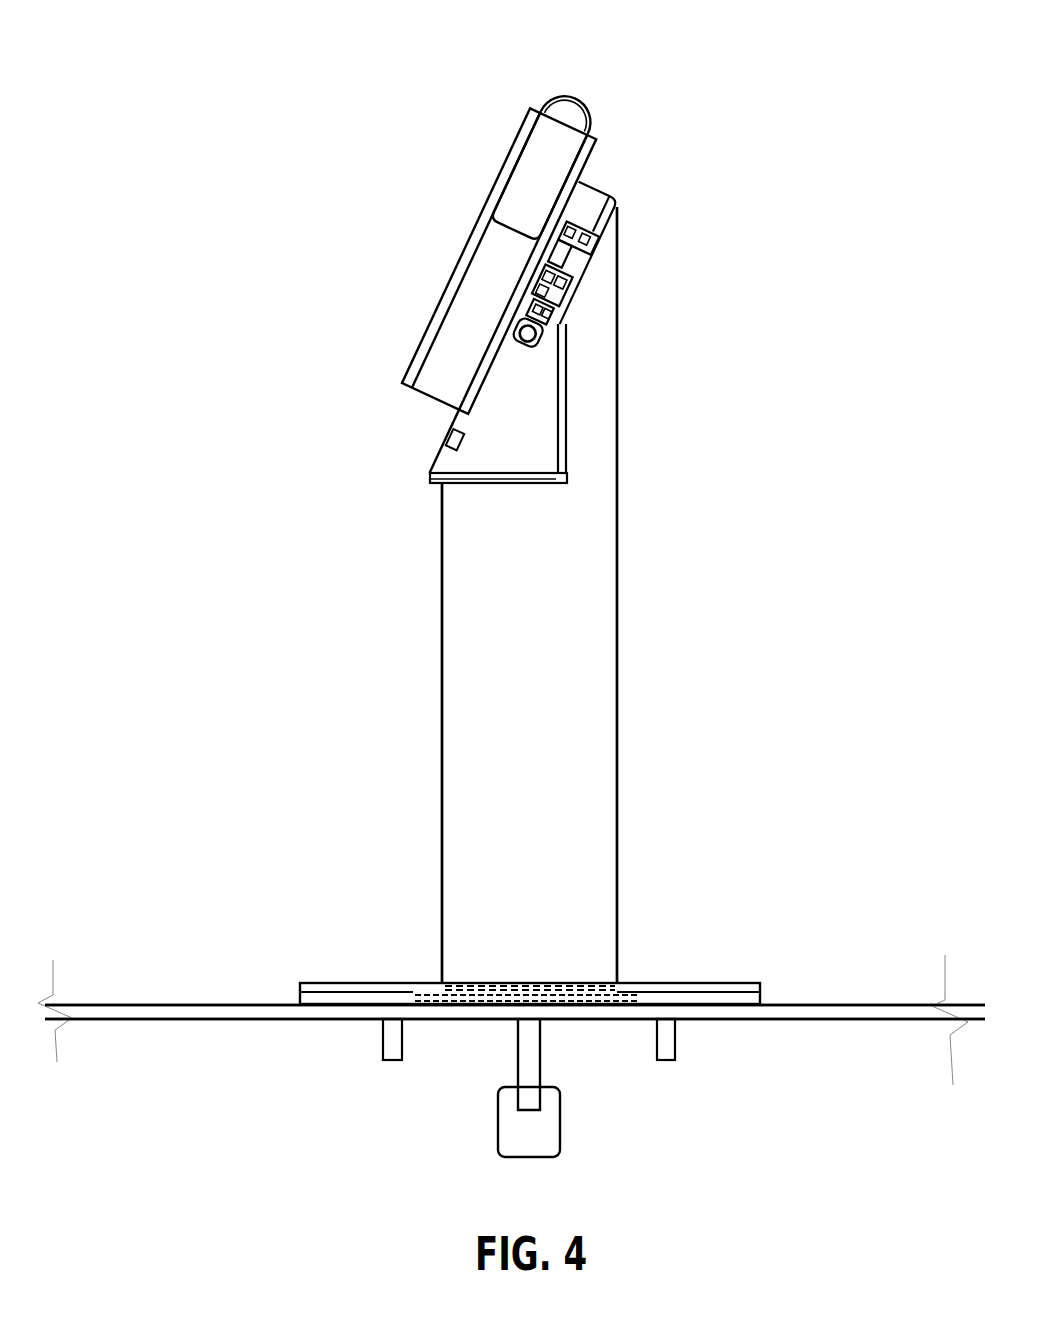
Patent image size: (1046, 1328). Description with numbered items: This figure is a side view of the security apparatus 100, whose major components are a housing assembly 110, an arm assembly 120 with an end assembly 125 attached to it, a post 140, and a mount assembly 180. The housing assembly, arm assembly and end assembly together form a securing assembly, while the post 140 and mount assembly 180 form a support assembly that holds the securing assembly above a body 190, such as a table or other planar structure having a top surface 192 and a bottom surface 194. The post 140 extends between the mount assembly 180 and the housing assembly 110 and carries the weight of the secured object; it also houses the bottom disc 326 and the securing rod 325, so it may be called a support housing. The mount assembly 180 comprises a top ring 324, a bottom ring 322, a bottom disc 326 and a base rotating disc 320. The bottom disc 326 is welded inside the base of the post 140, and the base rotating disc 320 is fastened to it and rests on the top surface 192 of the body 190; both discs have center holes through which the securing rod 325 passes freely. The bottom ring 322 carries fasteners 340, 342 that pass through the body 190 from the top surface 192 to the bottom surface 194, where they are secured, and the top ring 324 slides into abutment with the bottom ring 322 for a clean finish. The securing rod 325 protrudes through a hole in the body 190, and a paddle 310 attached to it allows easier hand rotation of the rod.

The security apparatus 100 is at (606, 37).
The housing assembly 110 is at (426, 447).
The arm assembly 120 is at (583, 300).
The end assembly 125 is at (608, 99).
The post 140 is at (608, 642).
The mount assembly 180 is at (676, 948).
The body 190 is at (902, 1005).
The top surface 192 is at (202, 1005).
The bottom surface 194 is at (213, 1020).
The paddle 310 is at (560, 1133).
The base rotating disc 320 is at (477, 1007).
The bottom ring 322 is at (753, 1000).
The top ring 324 is at (758, 984).
The securing rod 325 is at (538, 1060).
The bottom disc 326 is at (452, 983).
The fastener 340 is at (392, 1060).
The fastener 342 is at (662, 1058).